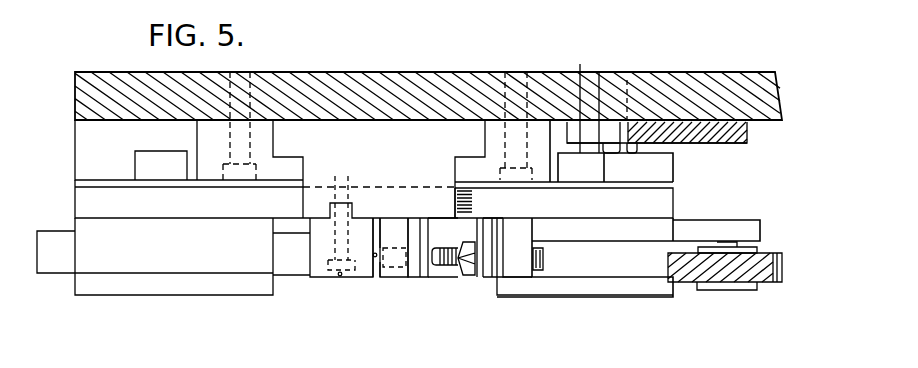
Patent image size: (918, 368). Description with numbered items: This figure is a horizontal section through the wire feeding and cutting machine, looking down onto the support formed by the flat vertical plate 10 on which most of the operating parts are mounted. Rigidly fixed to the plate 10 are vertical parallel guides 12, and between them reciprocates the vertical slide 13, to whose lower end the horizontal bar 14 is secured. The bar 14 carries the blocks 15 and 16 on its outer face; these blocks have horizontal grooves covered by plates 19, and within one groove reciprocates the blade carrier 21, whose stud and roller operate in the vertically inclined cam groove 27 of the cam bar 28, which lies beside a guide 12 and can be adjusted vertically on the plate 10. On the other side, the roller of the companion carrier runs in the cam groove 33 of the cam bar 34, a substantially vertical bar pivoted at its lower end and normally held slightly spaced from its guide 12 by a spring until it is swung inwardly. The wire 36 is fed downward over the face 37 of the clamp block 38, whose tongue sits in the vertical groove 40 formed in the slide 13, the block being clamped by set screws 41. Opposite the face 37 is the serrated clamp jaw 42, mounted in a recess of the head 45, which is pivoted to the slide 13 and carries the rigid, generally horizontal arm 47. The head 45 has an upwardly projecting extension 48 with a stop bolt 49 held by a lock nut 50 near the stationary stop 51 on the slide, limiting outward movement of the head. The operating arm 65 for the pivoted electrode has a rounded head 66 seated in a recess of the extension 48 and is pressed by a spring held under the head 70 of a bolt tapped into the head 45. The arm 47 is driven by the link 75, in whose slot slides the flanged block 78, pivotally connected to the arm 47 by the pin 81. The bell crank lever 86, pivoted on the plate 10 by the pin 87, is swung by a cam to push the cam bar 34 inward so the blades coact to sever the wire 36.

The vertical plate 10 is at (430, 80).
The vertical parallel guides 12 is at (258, 127).
The vertical slide 13 is at (332, 123).
The horizontal bar 14 is at (82, 202).
The block 15 is at (82, 228).
The block 16 is at (623, 267).
The plates 19 is at (210, 282).
The blade carrier 21 is at (50, 267).
The cam groove 27 is at (133, 163).
The cam bar 28 is at (88, 131).
The cam groove 33 is at (597, 98).
The cam bar 34 is at (673, 166).
The wire 36 is at (378, 262).
The face 37 is at (373, 255).
The clamp block 38 is at (318, 270).
The vertical groove 40 is at (352, 203).
The set screws 41 is at (340, 176).
The clamp jaw 42 is at (378, 270).
The head 45 is at (437, 270).
The arm 47 is at (587, 224).
The extension 48 is at (488, 278).
The stop bolt 49 is at (448, 268).
The lock nut 50 is at (470, 278).
The stationary stop 51 is at (420, 270).
The operating arm 65 is at (518, 278).
The rounded head 66 is at (511, 247).
The head 70 is at (545, 260).
The link 75 is at (685, 283).
The flanged block 78 is at (717, 292).
The pin 81 is at (730, 242).
The bell crank lever 86 is at (745, 141).
The pin 87 is at (622, 153).